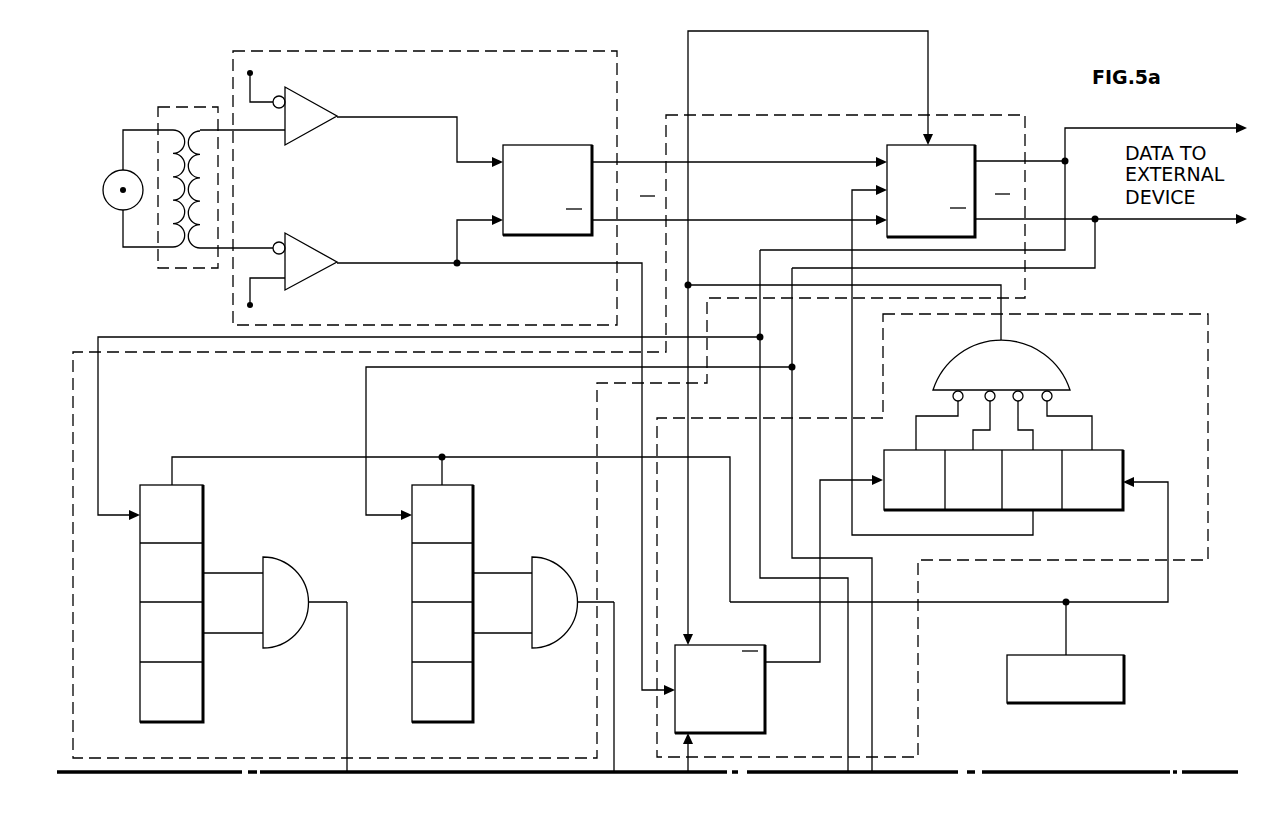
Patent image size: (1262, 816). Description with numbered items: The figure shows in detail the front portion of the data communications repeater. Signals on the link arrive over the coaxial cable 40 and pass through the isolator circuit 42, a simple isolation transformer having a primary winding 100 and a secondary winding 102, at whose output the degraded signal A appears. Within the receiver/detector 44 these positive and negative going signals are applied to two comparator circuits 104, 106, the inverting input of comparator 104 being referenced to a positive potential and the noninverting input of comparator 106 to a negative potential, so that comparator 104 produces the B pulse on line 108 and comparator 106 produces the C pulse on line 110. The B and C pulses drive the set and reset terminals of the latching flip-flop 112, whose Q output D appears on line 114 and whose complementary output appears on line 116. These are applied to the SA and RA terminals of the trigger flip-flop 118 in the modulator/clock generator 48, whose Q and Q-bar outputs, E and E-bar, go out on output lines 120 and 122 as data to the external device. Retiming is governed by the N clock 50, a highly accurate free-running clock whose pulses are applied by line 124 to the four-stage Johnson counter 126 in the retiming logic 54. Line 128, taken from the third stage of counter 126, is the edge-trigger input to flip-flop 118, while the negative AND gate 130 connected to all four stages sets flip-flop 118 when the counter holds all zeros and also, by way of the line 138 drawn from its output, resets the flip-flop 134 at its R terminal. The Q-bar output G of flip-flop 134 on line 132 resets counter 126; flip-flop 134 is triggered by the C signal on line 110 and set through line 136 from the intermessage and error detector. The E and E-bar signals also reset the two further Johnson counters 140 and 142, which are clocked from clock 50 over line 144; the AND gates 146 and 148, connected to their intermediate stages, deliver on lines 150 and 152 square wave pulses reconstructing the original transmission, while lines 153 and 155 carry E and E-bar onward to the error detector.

The coaxial cable 40 is at (104, 184).
The isolator circuit 42 is at (158, 268).
The receiver/detector 44 is at (618, 50).
The modulator/clock generator 48 is at (1025, 113).
The N clock 50 is at (1127, 660).
The retiming logic 54 is at (1208, 313).
The primary winding 100 is at (160, 130).
The secondary winding 102 is at (200, 107).
The comparator circuit 104 is at (318, 102).
The comparator circuit 106 is at (316, 240).
The line 108 is at (440, 116).
The line 110 is at (424, 262).
The flip-flop 112 is at (543, 145).
The line 114 is at (766, 159).
The line 116 is at (740, 219).
The trigger flip-flop 118 is at (889, 144).
The output line 120 is at (1045, 158).
The output line 122 is at (1044, 217).
The line 124 is at (1168, 602).
The counter 126 is at (1123, 448).
The line 128 is at (1033, 535).
The negative AND gate 130 is at (1060, 370).
The line 132 is at (832, 480).
The flip-flop 134 is at (767, 695).
The line 136 is at (692, 753).
The reset line 138 is at (690, 607).
The Johnson counter 140 is at (205, 512).
The Johnson counter 142 is at (475, 702).
The line 144 is at (515, 456).
The AND gate 146 is at (300, 561).
The AND gate 148 is at (540, 559).
The line 150 is at (347, 683).
The line 152 is at (614, 720).
The line 153 is at (848, 717).
The line 155 is at (872, 717).